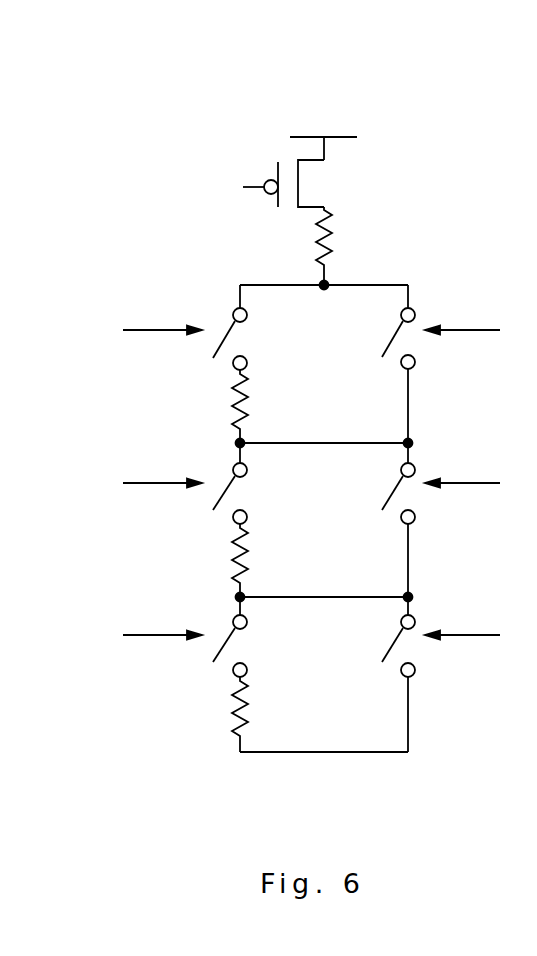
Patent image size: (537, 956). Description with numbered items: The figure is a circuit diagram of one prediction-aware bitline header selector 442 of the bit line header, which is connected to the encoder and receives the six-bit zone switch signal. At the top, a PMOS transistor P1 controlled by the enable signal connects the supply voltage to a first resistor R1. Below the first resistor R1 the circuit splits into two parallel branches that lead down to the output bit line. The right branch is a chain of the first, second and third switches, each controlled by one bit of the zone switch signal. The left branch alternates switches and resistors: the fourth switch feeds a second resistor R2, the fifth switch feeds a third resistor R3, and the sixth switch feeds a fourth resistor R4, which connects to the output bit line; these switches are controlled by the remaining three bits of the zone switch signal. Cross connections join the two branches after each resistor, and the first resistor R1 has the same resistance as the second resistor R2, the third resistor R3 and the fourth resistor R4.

The prediction-aware bitline header selector 442 is at (62, 73).
The transistor P1 is at (277, 177).
The first resistor R1 is at (298, 246).
The second resistor R2 is at (214, 406).
The third resistor R3 is at (214, 560).
The fourth resistor R4 is at (215, 714).